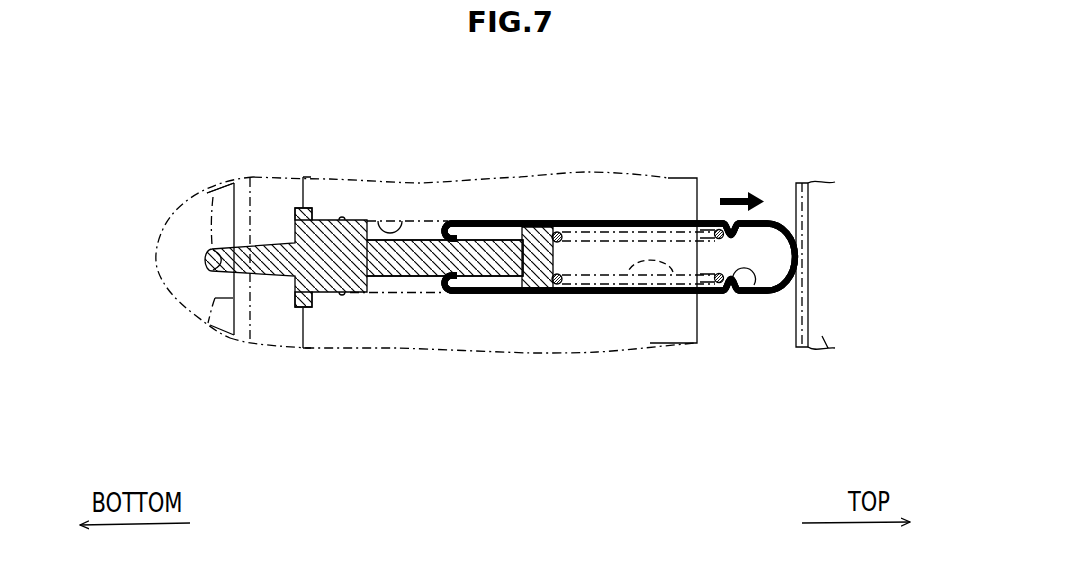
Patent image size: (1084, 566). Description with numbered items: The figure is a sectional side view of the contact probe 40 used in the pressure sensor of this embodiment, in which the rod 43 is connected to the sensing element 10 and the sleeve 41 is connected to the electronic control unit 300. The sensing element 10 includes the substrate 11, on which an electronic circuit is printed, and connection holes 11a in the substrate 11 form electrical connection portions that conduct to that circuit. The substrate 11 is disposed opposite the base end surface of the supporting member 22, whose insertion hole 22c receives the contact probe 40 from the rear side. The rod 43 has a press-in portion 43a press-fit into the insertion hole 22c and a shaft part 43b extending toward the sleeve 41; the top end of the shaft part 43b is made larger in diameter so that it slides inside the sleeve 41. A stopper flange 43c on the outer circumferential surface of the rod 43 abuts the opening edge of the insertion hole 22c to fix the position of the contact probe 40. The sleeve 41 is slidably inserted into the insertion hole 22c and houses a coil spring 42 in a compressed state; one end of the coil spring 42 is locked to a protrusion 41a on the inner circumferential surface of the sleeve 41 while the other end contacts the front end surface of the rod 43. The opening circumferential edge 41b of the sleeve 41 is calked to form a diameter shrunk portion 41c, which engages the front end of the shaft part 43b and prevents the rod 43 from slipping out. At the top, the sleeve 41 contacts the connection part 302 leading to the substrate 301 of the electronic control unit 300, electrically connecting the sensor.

The sensing element 10 is at (254, 329).
The substrate 11 is at (213, 333).
The connection hole 11a is at (215, 202).
The supporting member 22 is at (327, 192).
The insertion hole 22c is at (407, 220).
The contact probe 40 is at (622, 219).
The sleeve 41 is at (657, 220).
The protrusion 41a is at (757, 292).
The opening circumferential edge 41b is at (438, 238).
The diameter shrunk portion 41c is at (440, 287).
The coil spring 42 is at (673, 272).
The rod 43 is at (393, 265).
The press-in portion 43a is at (317, 270).
The shaft part 43b is at (475, 250).
The stopper flange 43c is at (286, 207).
The electronic control unit 300 is at (820, 258).
The substrate 301 is at (815, 350).
The connection part 302 is at (800, 93).